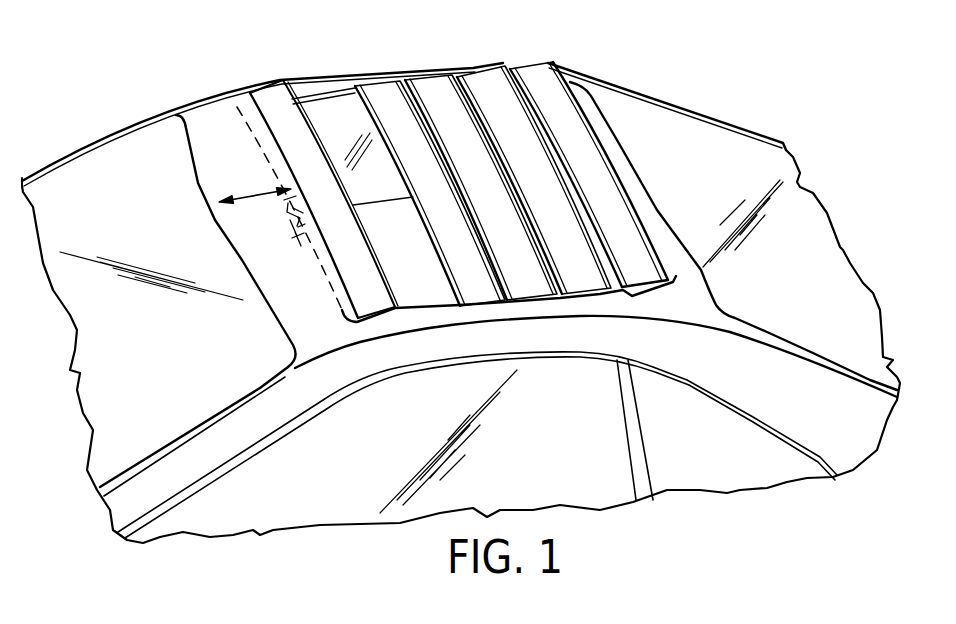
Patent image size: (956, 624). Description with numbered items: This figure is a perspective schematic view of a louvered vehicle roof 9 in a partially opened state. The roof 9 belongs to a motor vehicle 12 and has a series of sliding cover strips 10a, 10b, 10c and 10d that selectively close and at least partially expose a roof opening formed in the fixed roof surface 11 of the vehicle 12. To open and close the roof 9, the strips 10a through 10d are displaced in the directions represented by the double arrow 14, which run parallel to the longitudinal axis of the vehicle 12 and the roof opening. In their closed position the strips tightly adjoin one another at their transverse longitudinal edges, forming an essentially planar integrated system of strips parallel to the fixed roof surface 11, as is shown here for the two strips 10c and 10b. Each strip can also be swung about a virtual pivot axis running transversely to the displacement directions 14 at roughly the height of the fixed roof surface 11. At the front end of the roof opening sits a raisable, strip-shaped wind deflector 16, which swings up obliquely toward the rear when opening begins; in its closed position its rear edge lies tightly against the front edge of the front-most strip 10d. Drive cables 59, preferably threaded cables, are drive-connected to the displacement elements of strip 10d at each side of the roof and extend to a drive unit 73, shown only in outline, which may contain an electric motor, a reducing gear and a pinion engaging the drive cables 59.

The vehicle roof 9 is at (644, 80).
The sliding cover strip 10a is at (540, 88).
The sliding cover strip 10b is at (497, 88).
The sliding cover strip 10c is at (443, 97).
The sliding cover strip 10d is at (390, 105).
The fixed roof surface 11 is at (224, 116).
The motor vehicle 12 is at (705, 509).
The double arrow 14 is at (250, 197).
The wind deflector 16 is at (280, 107).
The drive cables 59 is at (253, 153).
The drive unit 73 is at (295, 247).